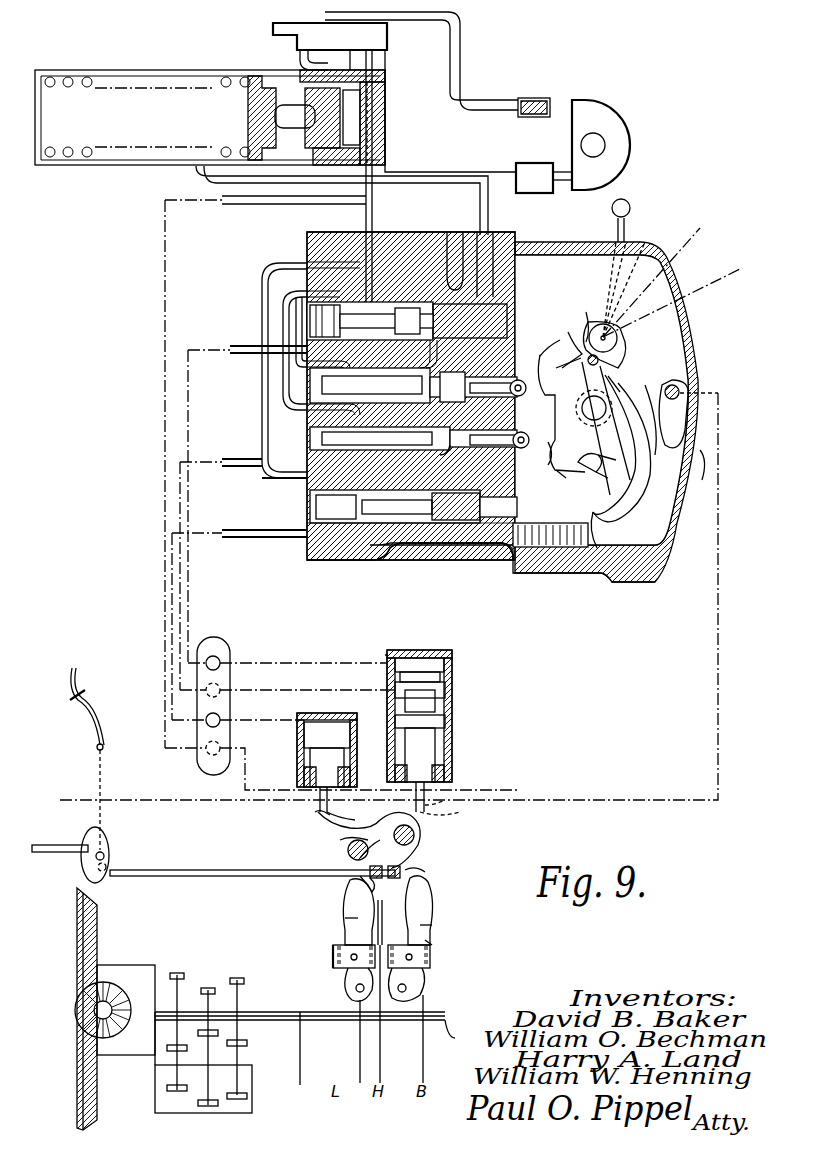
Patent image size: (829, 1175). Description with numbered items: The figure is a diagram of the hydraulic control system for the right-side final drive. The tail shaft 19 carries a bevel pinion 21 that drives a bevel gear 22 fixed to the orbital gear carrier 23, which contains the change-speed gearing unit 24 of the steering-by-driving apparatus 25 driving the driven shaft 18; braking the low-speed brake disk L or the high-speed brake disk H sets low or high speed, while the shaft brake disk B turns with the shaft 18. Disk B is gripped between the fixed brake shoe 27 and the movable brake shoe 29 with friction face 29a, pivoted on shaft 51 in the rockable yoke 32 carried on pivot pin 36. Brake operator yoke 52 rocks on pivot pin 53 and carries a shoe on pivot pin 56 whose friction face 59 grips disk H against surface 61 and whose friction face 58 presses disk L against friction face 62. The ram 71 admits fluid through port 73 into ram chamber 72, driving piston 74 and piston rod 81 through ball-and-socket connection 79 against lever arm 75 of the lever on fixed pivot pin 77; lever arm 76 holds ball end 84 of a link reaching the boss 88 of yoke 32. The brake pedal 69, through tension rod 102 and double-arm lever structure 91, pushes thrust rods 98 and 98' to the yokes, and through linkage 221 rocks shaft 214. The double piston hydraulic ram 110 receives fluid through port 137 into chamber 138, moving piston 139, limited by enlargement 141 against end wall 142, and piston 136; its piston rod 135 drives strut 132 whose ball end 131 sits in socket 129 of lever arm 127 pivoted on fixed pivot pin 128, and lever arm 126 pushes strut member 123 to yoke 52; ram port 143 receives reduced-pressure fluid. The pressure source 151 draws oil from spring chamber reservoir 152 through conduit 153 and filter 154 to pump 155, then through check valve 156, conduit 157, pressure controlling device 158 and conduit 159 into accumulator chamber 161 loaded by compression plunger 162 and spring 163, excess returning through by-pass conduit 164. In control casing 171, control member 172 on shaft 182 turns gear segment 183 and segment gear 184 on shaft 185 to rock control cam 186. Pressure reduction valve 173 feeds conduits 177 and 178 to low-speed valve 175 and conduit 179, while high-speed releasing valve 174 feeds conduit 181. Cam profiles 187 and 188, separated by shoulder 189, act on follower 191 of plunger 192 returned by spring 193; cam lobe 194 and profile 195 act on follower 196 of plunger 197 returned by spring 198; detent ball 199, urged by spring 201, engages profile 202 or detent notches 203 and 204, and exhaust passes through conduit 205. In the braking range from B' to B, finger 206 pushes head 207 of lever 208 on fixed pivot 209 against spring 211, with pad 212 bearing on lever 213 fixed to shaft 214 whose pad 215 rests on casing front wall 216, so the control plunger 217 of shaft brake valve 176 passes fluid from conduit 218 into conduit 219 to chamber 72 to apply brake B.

The driven shaft 18 is at (310, 1027).
The tail shaft 19 is at (95, 1043).
The bevel pinion 21 is at (100, 1013).
The bevel gear 22 is at (77, 913).
The orbital gear carrier 23 is at (252, 1109).
The final drive change-speed gearing unit 24 is at (262, 1079).
The steering-by-driving apparatus 25 is at (322, 1107).
The fixed brake shoe 27 is at (432, 950).
The movable brake shoe 29 is at (432, 935).
The friction face 29a is at (432, 945).
The rockable yoke 32 is at (432, 900).
The pivot pin 36 is at (408, 990).
The pivot shaft 51 is at (425, 968).
The brake operator yoke 52 is at (348, 905).
The pivot pin 53 is at (360, 1015).
The pivot pin 56 is at (352, 968).
The friction face 58 is at (340, 948).
The friction face 59 is at (388, 922).
The friction surface 61 is at (388, 947).
The friction face 62 is at (333, 958).
The brake pedal 69 is at (80, 700).
The ram 71 is at (333, 712).
The ram chamber 72 is at (348, 722).
The port 73 is at (300, 718).
The piston 74 is at (310, 745).
The lever arm 75 is at (330, 828).
The lever arm 76 is at (418, 855).
The fixed pivot pin 77 is at (416, 835).
The ball-and-socket connection 79 is at (316, 817).
The piston rod 81 is at (384, 804).
The ball end 84 is at (402, 873).
The boss 88 is at (428, 875).
The double-arm lever structure 91 is at (110, 852).
The thrust rod 98 is at (252, 858).
The thrust rod 98' is at (60, 832).
The tension rod 102 is at (102, 810).
The double piston hydraulic ram 110 is at (470, 693).
The strut member 123 is at (348, 905).
The lever arm 126 is at (360, 885).
The lever arm 127 is at (345, 840).
The fixed pivot pin 128 is at (347, 851).
The socket 129 is at (463, 810).
The ball end 131 is at (445, 800).
The strut 132 is at (430, 798).
The piston rod 135 is at (435, 748).
The piston 136 is at (445, 722).
The port 137 is at (387, 660).
The chamber 138 is at (440, 660).
The piston 139 is at (435, 700).
The enlargement 141 is at (440, 675).
The end wall 142 is at (445, 690).
The ram port 143 is at (387, 690).
The fluid pressure source 151 is at (392, 98).
The spring chamber reservoir 152 is at (140, 166).
The conduit 153 is at (206, 180).
The filter 154 is at (533, 186).
The pump 155 is at (628, 128).
The check valve 156 is at (545, 97).
The conduit 157 is at (460, 48).
The pressure controlling device 158 is at (387, 31).
The conduit 159 is at (352, 60).
The accumulator chamber 161 is at (352, 120).
The compression plunger 162 is at (367, 140).
The spring 163 is at (87, 160).
The low pressure by-pass conduit 164 is at (300, 62).
The control casing 171 is at (700, 335).
The valve adjusting control member 172 is at (616, 224).
The pressure reduction valve 173 is at (395, 306).
The high-speed brake releasing valve 174 is at (390, 368).
The low-speed brake engaging valve 175 is at (392, 427).
The shaft brake engaging valve 176 is at (385, 491).
The conduit 177 is at (365, 218).
The conduit 178 is at (268, 300).
The conduit 179 is at (225, 467).
The conduit 181 is at (235, 345).
The shaft 182 is at (617, 338).
The gear segment 183 is at (622, 350).
The segment gear 184 is at (620, 390).
The shaft 185 is at (610, 405).
The control cam 186 is at (561, 413).
The short radius profile 187 is at (565, 340).
The long radius profile 188 is at (562, 362).
The shoulder 189 is at (553, 348).
The follower 191 is at (491, 383).
The valve plunger 192 is at (510, 388).
The spring 193 is at (440, 352).
The cam lobe 194 is at (580, 402).
The profile 195 is at (582, 408).
The follower 196 is at (499, 446).
The valve plunger 197 is at (513, 440).
The spring 198 is at (452, 459).
The detent ball 199 is at (620, 459).
The spring 201 is at (616, 479).
The profile 202 is at (583, 458).
The detent notch 203 is at (547, 480).
The detent notch 204 is at (537, 457).
The low-pressure conduit 205 is at (540, 328).
The finger 206 is at (628, 500).
The head 207 is at (600, 520).
The lever 208 is at (645, 478).
The fixed pivot 209 is at (588, 318).
The spring 211 is at (540, 560).
The pad 212 is at (662, 436).
The lever 213 is at (700, 470).
The rockable shaft 214 is at (681, 390).
The pad 215 is at (700, 422).
The casing front wall 216 is at (700, 450).
The control plunger 217 is at (483, 543).
The conduit 218 is at (268, 482).
The conduit 219 is at (263, 537).
The linkage 221 is at (165, 798).
The shaft brake disk B is at (617, 256).
The braking range start point B' is at (639, 263).
The low-speed brake disk L is at (654, 271).
The high-speed brake disk H is at (677, 294).